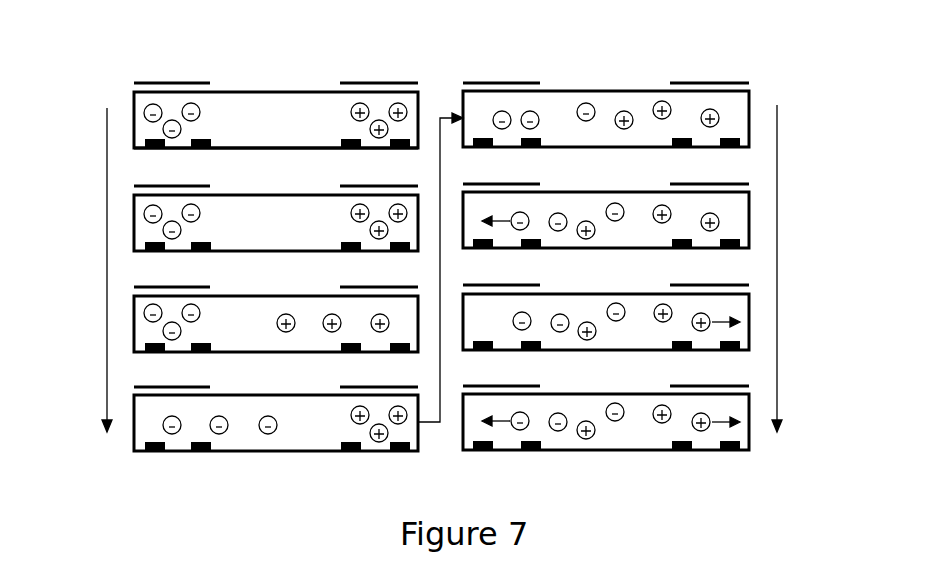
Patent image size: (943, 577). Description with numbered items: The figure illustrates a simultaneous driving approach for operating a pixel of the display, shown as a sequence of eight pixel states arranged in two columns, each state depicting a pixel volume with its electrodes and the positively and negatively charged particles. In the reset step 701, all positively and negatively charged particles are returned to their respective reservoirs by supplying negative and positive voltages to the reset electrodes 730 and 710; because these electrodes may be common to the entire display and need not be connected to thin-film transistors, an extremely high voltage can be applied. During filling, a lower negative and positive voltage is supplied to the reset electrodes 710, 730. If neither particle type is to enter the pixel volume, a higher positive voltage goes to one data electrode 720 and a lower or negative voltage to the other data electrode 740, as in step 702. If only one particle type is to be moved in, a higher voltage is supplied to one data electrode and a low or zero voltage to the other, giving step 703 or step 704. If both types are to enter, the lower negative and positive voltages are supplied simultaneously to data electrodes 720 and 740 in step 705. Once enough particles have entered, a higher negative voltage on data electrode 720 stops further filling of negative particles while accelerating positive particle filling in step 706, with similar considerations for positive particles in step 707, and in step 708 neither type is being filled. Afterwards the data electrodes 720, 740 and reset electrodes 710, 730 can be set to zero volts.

The reset step 701 is at (222, 125).
The filling step with no particles moved 702 is at (143, 235).
The filling step with one particle type moved 703 is at (143, 338).
The filling step with other particle type moved 704 is at (143, 438).
The filling step with both particle types moved 705 is at (738, 112).
The step stopping negative particle filling 706 is at (738, 212).
The step stopping positive particle filling 707 is at (738, 312).
The step with no further filling 708 is at (738, 404).
The reset electrode 710 is at (138, 148).
The data electrode 720 is at (205, 146).
The reset electrode 730 is at (417, 134).
The data electrode 740 is at (341, 138).